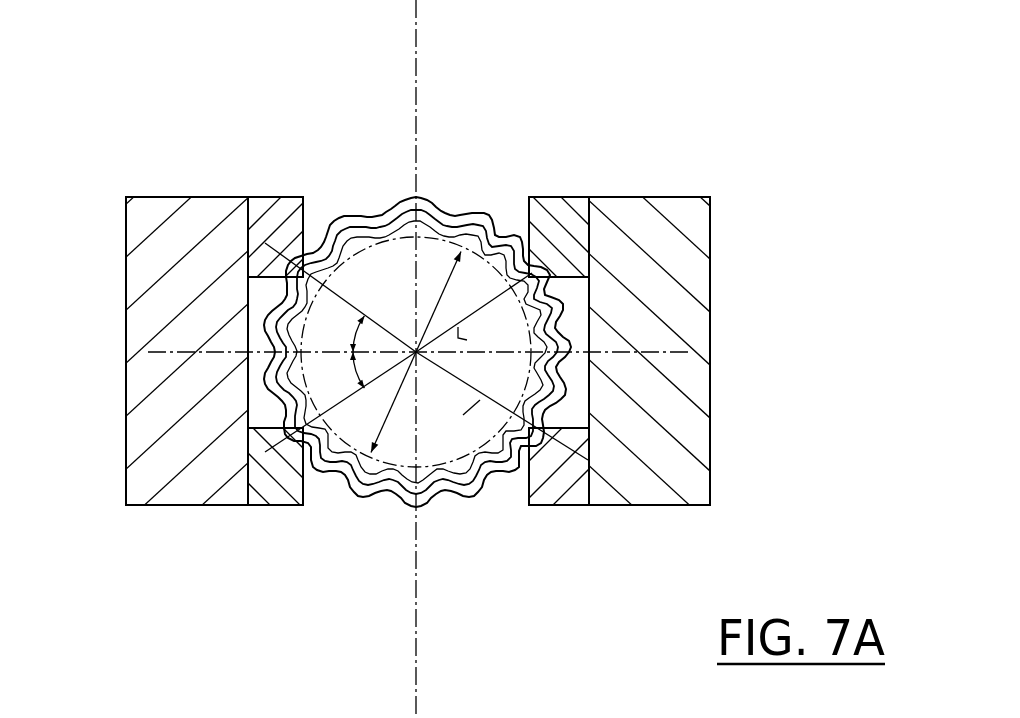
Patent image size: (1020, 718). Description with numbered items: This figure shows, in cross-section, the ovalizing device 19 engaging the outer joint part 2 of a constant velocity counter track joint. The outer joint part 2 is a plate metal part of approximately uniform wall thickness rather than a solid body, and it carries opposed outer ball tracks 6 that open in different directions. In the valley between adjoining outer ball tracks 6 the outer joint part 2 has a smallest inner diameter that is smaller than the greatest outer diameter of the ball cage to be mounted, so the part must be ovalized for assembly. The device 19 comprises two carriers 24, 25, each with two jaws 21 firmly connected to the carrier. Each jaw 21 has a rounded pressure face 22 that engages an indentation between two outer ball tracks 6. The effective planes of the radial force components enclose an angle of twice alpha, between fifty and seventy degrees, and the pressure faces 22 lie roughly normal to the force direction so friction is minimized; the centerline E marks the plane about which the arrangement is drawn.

The device 19 is at (660, 130).
The outer joint part 2 is at (433, 195).
The outer ball tracks 6 is at (403, 197).
The carrier 25 is at (142, 272).
The carrier 24 is at (695, 393).
The jaws 21 is at (571, 493).
The pressure face 22 is at (490, 447).
The center plane E is at (670, 348).